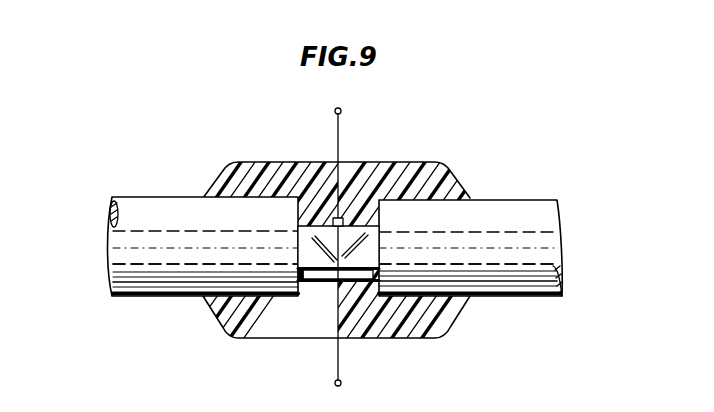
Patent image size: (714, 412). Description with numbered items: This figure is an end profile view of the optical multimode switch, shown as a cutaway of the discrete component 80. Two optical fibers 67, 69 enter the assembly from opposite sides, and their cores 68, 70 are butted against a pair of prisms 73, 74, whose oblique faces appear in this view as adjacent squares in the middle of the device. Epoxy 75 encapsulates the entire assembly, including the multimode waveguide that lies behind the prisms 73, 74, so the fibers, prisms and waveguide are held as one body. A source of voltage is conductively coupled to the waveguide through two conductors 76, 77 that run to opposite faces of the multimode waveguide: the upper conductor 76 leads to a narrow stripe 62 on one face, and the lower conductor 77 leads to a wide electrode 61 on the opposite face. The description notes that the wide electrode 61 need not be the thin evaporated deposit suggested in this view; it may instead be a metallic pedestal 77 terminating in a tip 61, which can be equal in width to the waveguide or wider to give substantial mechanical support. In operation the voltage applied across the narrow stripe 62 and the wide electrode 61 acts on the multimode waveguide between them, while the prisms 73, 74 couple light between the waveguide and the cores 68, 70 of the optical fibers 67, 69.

The coupling assembly 80 is at (553, 105).
The epoxy 75 is at (456, 168).
The conductor 76 is at (341, 133).
The conductor 77 is at (341, 365).
The narrow stripe 62 is at (333, 218).
The prism 73 is at (312, 236).
The prism 74 is at (364, 242).
The wide electrode 61 is at (318, 282).
The optical fiber 67 is at (140, 297).
The core 68 is at (130, 265).
The optical fiber 69 is at (543, 290).
The core 70 is at (549, 264).